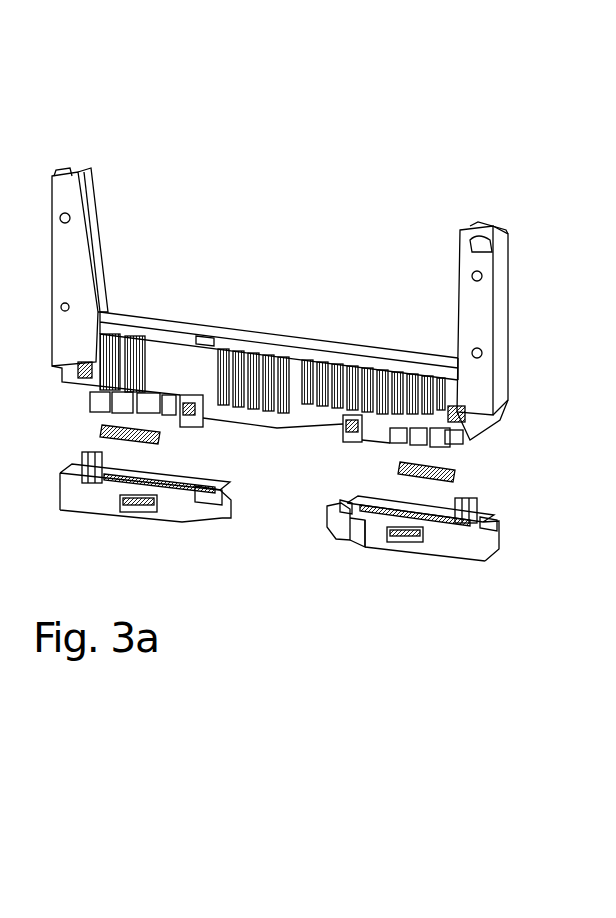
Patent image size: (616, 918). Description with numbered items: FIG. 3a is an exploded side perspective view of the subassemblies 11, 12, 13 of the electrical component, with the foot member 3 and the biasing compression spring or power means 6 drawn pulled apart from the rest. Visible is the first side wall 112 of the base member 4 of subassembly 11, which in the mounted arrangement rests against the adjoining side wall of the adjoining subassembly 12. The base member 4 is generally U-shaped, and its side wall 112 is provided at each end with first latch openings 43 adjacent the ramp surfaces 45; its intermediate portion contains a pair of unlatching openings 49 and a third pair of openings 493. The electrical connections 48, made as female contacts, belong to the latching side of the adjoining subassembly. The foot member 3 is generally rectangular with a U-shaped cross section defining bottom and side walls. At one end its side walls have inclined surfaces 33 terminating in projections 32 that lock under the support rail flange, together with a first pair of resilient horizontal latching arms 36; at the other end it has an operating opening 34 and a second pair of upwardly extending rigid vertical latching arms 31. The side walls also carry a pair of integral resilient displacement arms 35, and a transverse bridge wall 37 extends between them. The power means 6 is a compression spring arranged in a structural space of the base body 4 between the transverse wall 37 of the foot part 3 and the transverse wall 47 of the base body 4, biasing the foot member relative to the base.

The subassembly 11 is at (298, 240).
The adjoining subassembly 12 is at (298, 240).
The subassembly 13 is at (147, 101).
The base member 4 is at (93, 165).
The first side wall 112 is at (67, 247).
The first latch openings 43 is at (82, 362).
The ramp surfaces 45 is at (140, 395).
The unlatching openings 49 is at (188, 395).
The third pair of openings 493 is at (252, 426).
The electrical connections 48 is at (315, 362).
The transverse wall 47 is at (457, 437).
The power means 6 is at (103, 430).
The foot member 3 is at (72, 500).
The vertical latching arms 31 is at (480, 500).
The projections 32 is at (342, 515).
The inclined surfaces 33 is at (333, 530).
The operating opening 34 is at (487, 527).
The resilient displacement arms 35 is at (410, 538).
The horizontal latching arms 36 is at (353, 525).
The transverse bridge wall 37 is at (390, 515).